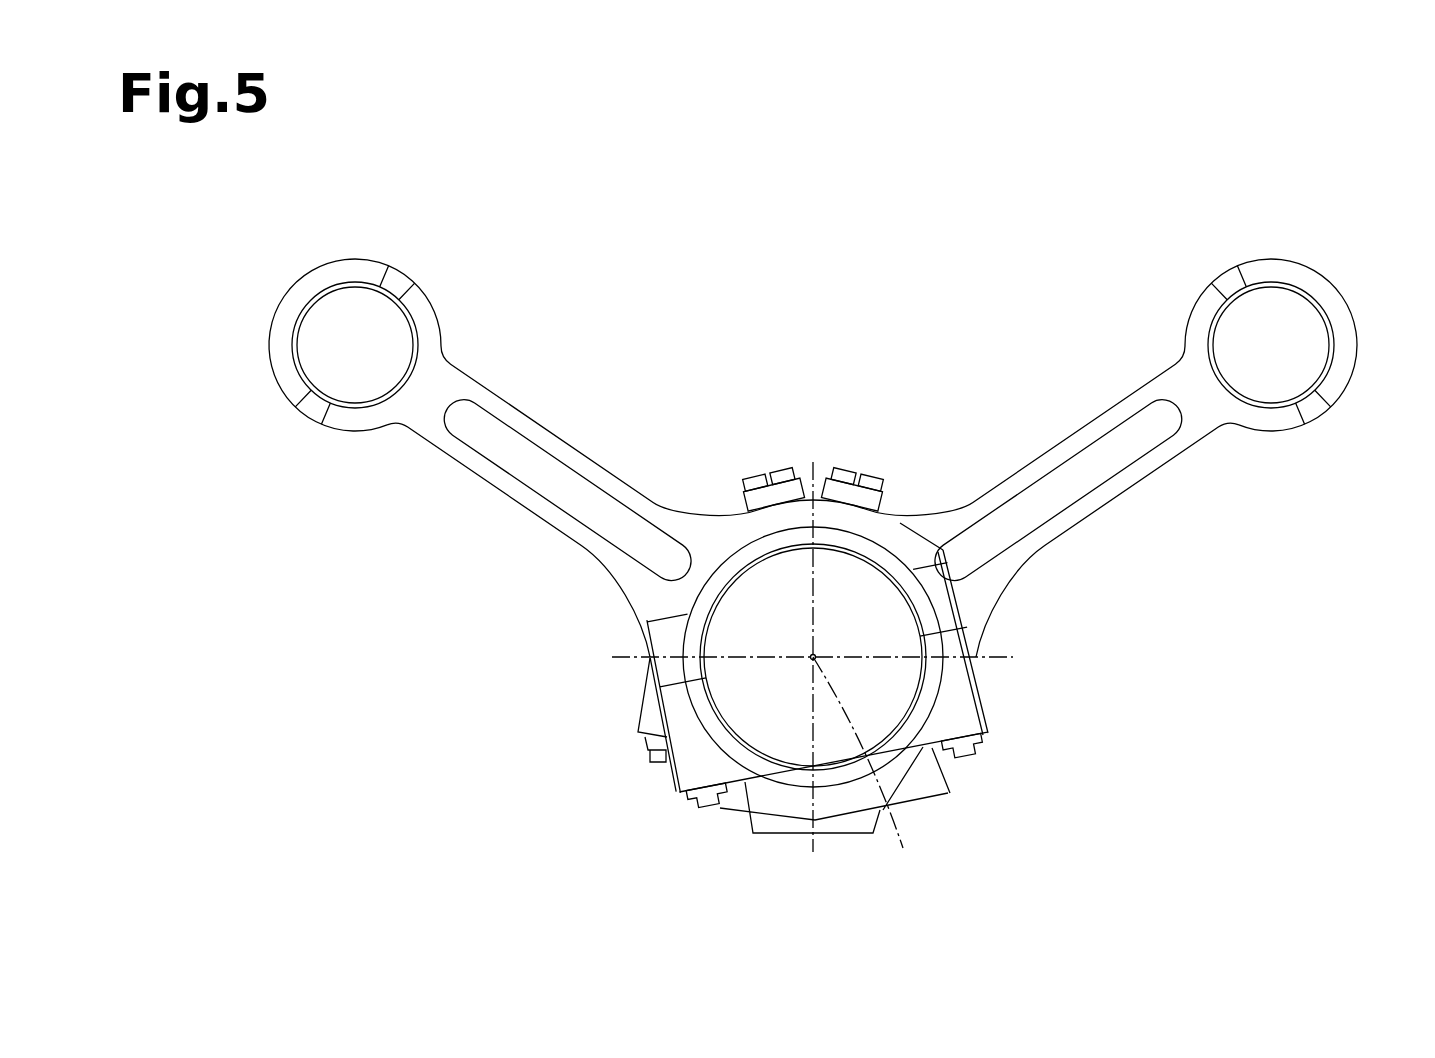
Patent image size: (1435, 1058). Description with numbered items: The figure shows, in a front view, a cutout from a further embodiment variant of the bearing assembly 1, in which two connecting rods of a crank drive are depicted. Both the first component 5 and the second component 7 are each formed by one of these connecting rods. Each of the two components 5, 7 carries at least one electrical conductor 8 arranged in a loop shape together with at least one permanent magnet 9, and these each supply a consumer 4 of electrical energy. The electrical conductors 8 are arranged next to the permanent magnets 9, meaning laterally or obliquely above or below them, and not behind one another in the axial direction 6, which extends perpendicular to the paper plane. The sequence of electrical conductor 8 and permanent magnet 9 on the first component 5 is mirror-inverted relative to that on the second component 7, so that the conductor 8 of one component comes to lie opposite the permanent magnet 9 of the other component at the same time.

The bearing assembly 1 is at (1337, 162).
The consumer of electrical energy 4 is at (735, 497).
The first component 5 is at (590, 426).
The axial direction 6 is at (905, 852).
The second component 7 is at (1053, 413).
The electrical conductor 8 is at (757, 458).
The permanent magnet 9 is at (787, 460).